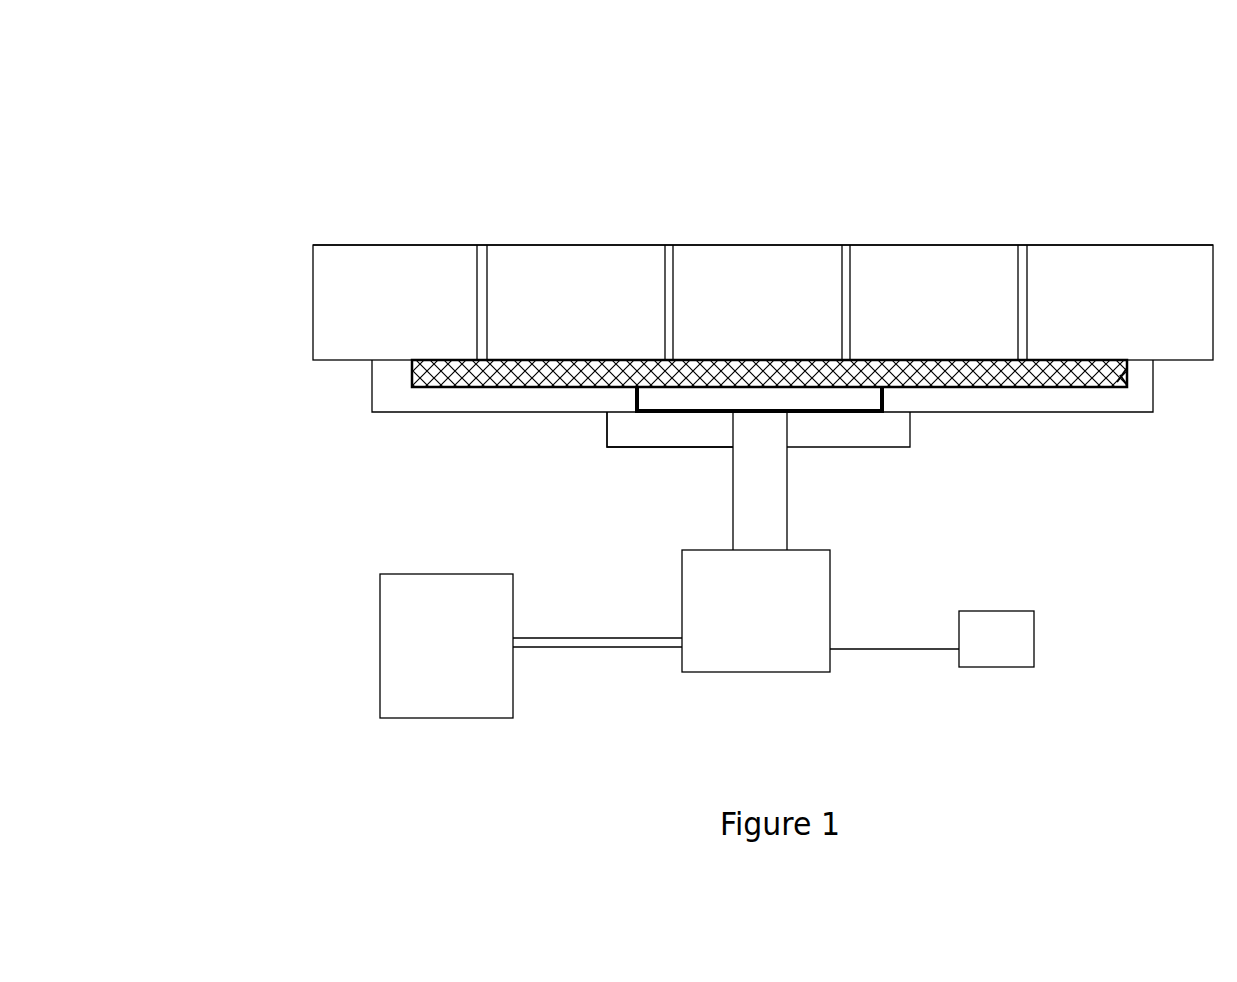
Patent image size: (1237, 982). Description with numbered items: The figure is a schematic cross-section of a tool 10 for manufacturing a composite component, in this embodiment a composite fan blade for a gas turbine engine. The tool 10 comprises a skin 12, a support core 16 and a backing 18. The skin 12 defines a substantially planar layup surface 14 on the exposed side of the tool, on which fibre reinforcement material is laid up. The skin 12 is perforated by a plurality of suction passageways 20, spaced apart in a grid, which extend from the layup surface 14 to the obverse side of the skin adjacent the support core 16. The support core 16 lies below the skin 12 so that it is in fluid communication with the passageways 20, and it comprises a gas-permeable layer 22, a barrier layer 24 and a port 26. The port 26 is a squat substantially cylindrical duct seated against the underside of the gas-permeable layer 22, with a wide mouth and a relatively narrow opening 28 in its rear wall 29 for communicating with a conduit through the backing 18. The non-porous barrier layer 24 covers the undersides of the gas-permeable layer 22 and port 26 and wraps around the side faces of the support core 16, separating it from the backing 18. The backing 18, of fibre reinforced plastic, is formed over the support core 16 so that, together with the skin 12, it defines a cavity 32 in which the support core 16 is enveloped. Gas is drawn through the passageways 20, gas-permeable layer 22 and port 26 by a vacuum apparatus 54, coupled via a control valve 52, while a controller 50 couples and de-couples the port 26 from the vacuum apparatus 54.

The tool 10 is at (1050, 87).
The skin 12 is at (332, 293).
The layup surface 14 is at (438, 243).
The support core 16 is at (1113, 387).
The backing 18 is at (620, 418).
The suction passageways 20 is at (662, 277).
The gas-permeable layer 22 is at (1057, 388).
The barrier layer 24 is at (925, 388).
The port 26 is at (827, 398).
The opening 28 is at (758, 413).
The rear wall 29 is at (683, 418).
The cavity 32 is at (660, 392).
The controller 50 is at (1034, 637).
The control valve 52 is at (797, 675).
The vacuum apparatus 54 is at (513, 686).